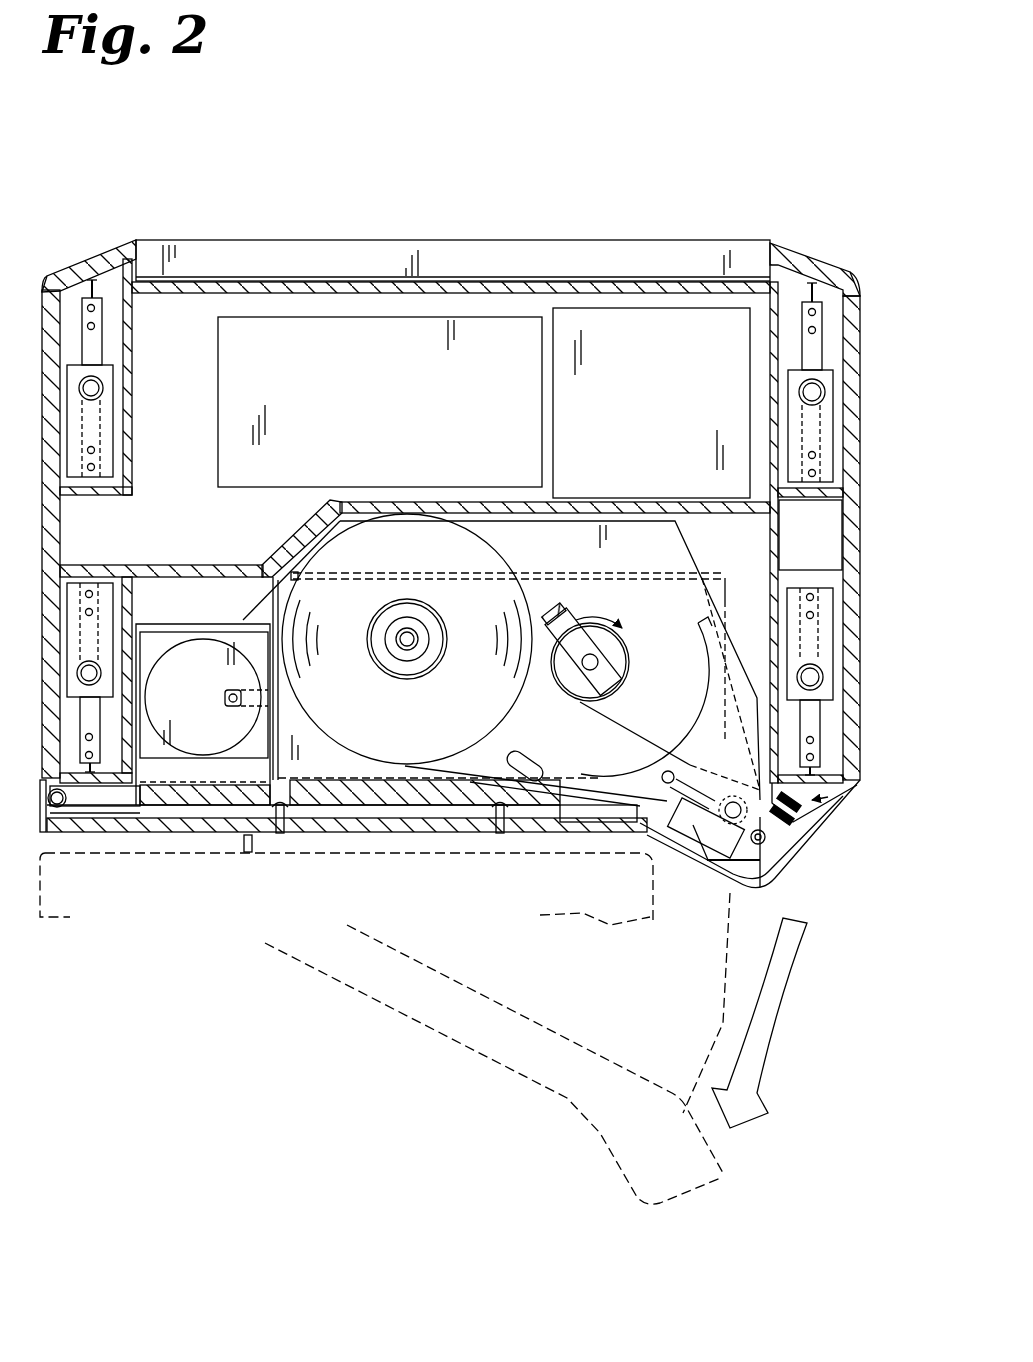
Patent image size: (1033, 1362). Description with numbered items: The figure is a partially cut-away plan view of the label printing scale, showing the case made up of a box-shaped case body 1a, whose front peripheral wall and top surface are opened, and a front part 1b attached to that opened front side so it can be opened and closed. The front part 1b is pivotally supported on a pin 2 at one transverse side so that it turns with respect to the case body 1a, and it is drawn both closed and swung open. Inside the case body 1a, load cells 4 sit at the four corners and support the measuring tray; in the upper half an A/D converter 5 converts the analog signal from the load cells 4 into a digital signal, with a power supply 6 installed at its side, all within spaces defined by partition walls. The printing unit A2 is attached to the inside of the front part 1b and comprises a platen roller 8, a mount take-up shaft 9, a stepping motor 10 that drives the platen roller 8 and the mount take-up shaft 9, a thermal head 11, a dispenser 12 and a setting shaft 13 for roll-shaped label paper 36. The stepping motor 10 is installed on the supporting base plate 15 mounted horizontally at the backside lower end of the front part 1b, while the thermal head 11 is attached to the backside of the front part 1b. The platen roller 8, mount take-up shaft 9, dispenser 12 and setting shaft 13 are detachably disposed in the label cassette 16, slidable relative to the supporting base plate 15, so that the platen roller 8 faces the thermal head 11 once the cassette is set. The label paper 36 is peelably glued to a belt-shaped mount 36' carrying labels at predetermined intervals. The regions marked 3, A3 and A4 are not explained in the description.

The case body 1a is at (818, 268).
The front part 1b is at (680, 880).
The pin 2 is at (45, 795).
The tape cutter 3 is at (828, 798).
The load cell 4 is at (95, 430).
The A/D converter 5 is at (665, 377).
The power supply 6 is at (340, 380).
The platen roller 8 is at (715, 795).
The mount take-up shaft 9 is at (610, 650).
The stepping motor 10 is at (205, 740).
The thermal head 11 is at (700, 855).
The dispenser 12 is at (770, 840).
The setting shaft 13 is at (420, 622).
The supporting base plate 15 is at (183, 628).
The label cassette 16 is at (637, 548).
The label paper 36 is at (430, 639).
The belt-shaped mount 36' is at (582, 711).
The printing unit A2 is at (257, 603).
The cover area A3 is at (40, 920).
The upper shelf area A4 is at (505, 265).